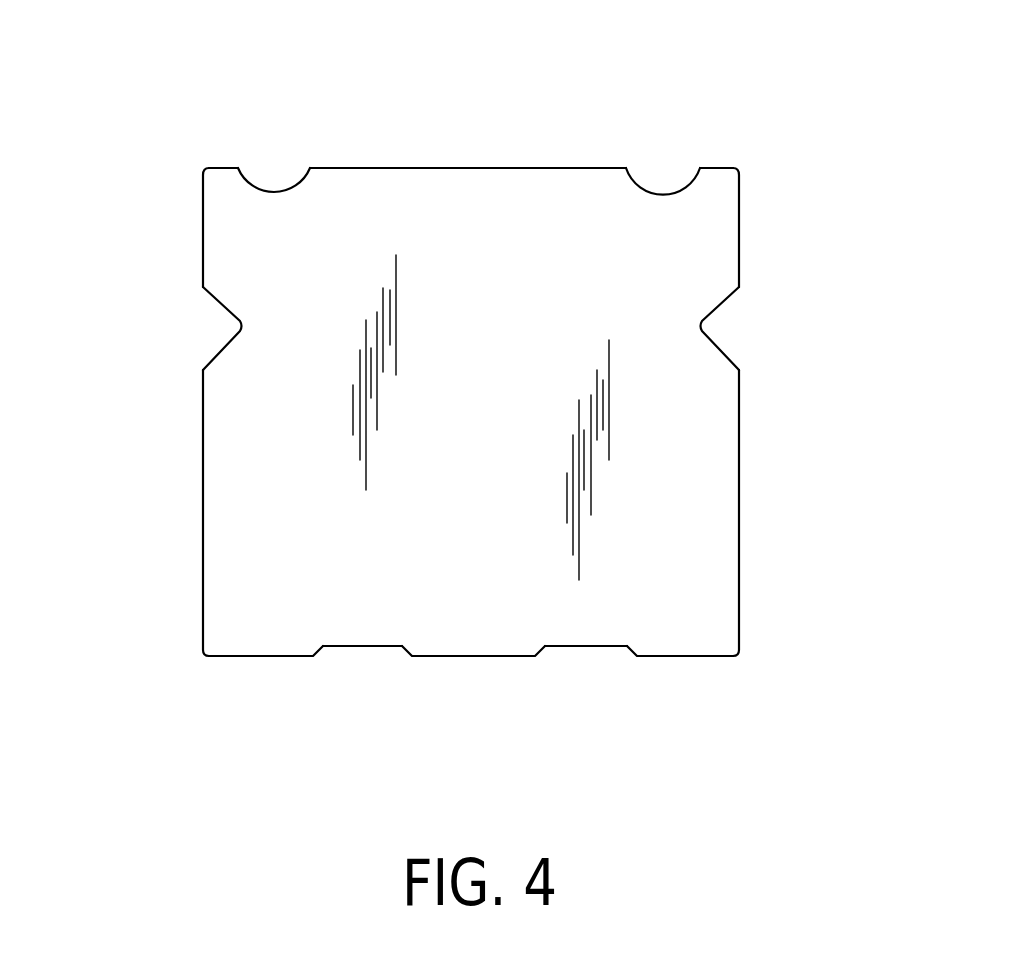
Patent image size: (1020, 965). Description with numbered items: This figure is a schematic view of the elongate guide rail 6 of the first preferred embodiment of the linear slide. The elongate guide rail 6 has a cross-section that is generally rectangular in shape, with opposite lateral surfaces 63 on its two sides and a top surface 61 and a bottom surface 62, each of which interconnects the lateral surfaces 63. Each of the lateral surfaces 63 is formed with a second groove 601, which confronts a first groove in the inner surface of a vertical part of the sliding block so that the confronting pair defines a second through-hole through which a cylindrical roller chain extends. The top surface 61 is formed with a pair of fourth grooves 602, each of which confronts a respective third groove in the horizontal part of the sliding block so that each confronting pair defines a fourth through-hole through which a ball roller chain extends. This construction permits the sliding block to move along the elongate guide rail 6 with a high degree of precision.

The elongate guide rail 6 is at (478, 668).
The top surface 61 is at (470, 168).
The bottom surface 62 is at (255, 657).
The lateral surfaces 63 is at (203, 473).
The second groove 601 is at (221, 306).
The fourth grooves 602 is at (272, 193).